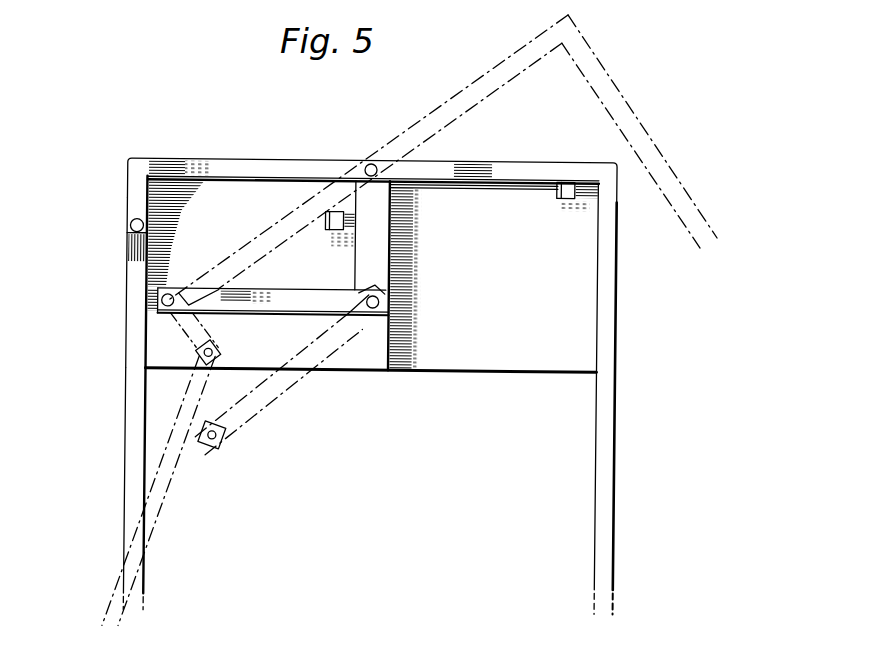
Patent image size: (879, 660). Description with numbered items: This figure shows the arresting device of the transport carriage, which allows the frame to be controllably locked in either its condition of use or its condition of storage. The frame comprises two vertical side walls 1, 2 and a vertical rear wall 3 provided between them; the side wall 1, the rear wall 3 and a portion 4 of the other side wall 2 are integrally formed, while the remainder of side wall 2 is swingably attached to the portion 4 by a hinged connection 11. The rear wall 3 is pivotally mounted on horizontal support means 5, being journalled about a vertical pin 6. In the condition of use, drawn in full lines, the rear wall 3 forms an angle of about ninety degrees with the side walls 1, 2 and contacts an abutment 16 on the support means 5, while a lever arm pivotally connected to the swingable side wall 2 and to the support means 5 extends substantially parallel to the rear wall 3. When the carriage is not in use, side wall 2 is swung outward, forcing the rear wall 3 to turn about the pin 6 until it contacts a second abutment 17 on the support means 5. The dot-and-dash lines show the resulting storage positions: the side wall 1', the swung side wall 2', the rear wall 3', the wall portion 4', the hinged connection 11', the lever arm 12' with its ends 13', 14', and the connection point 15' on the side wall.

The side wall 1 is at (625, 399).
The side wall in storage position 1' is at (640, 131).
The side wall 2 is at (118, 488).
The swingable side wall in storage position 2' is at (139, 490).
The rear wall 3 is at (372, 160).
The rear wall in storage position 3' is at (368, 157).
The portion of side wall 4 is at (144, 270).
The side wall portion in storage position 4' is at (156, 333).
The support means 5 is at (447, 353).
The vertical pin 6 is at (370, 164).
The hinged connection 11 is at (117, 239).
The hinged connection in storage position 11' is at (187, 368).
The lever arm in storage position 12' is at (271, 376).
The lever end in storage position 13' is at (352, 355).
The lever end in storage position 14' is at (283, 395).
The pivot point in storage position 15' is at (222, 453).
The abutment 16 is at (564, 185).
The second abutment 17 is at (325, 212).